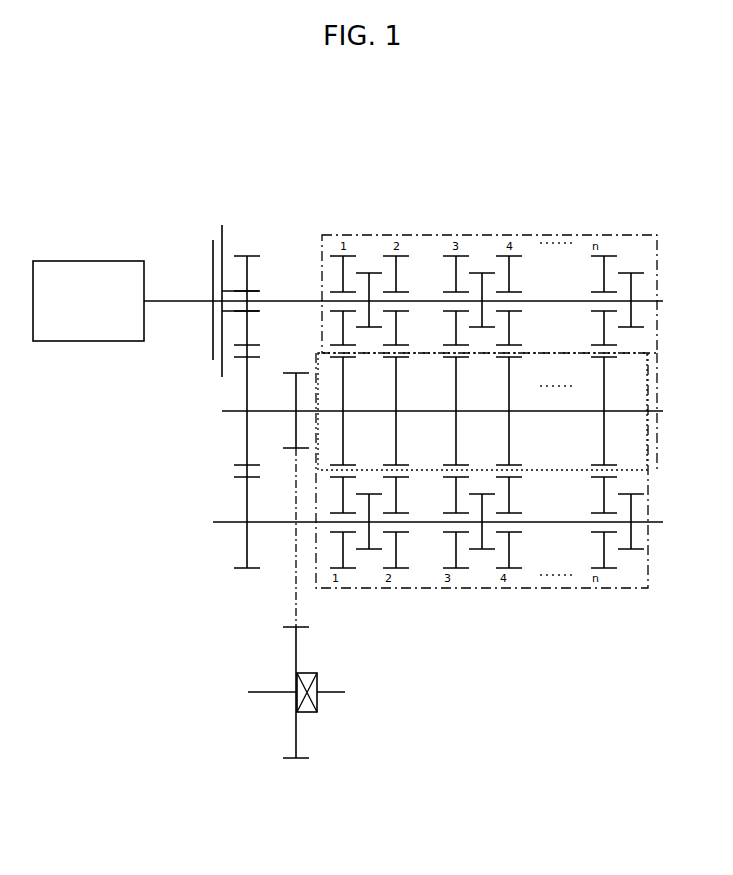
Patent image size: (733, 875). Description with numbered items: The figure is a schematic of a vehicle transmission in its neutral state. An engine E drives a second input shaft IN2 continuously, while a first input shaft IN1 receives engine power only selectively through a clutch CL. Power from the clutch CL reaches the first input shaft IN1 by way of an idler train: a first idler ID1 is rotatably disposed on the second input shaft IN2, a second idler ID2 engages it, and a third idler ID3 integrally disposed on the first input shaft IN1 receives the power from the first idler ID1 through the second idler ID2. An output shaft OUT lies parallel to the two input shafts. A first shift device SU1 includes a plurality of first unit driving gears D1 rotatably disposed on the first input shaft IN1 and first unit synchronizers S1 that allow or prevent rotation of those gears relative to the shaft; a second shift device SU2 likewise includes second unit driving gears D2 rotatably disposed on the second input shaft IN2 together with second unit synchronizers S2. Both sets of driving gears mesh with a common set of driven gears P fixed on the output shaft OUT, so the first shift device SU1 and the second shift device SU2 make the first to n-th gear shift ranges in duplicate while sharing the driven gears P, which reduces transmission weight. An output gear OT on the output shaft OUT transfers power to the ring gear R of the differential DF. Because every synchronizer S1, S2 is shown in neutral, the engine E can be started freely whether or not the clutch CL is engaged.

The engine E is at (88, 261).
The clutch CL is at (221, 226).
The first idler ID1 is at (248, 256).
The second idler ID2 is at (240, 477).
The third idler ID3 is at (252, 580).
The output gear OT is at (297, 373).
The differential DF is at (279, 713).
The ring gear R is at (296, 758).
The first input shaft IN1 is at (646, 522).
The second input shaft IN2 is at (663, 301).
The output shaft OUT is at (658, 402).
The driven gears P is at (647, 353).
The first shift device SU1 is at (553, 588).
The second shift device SU2 is at (547, 235).
The first unit driving gears D1 is at (343, 568).
The second unit driving gears D2 is at (396, 256).
The first unit synchronizers S1 is at (369, 549).
The second unit synchronizers S2 is at (369, 273).